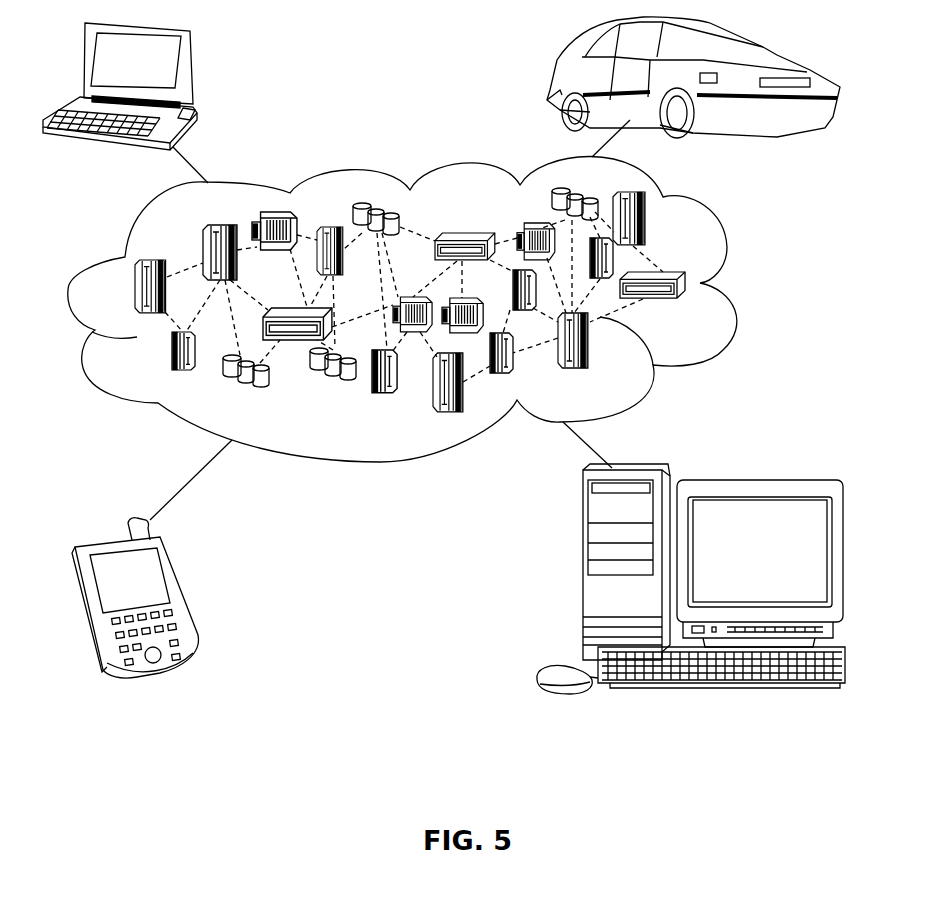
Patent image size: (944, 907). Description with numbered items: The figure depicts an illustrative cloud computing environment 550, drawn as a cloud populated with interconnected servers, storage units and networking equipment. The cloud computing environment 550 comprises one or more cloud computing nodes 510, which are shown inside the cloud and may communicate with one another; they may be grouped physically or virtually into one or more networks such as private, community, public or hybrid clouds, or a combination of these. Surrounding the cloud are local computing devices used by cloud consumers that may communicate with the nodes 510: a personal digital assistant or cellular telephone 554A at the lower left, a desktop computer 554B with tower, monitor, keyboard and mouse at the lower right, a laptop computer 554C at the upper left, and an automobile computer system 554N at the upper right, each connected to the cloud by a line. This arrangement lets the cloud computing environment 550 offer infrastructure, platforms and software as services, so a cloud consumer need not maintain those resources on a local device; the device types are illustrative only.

The cloud computing nodes 510 is at (703, 307).
The cloud computing environment 550 is at (727, 250).
The personal digital assistant or cellular telephone 554A is at (183, 590).
The desktop computer 554B is at (580, 572).
The laptop computer 554C is at (193, 67).
The automobile computer system 554N is at (555, 68).